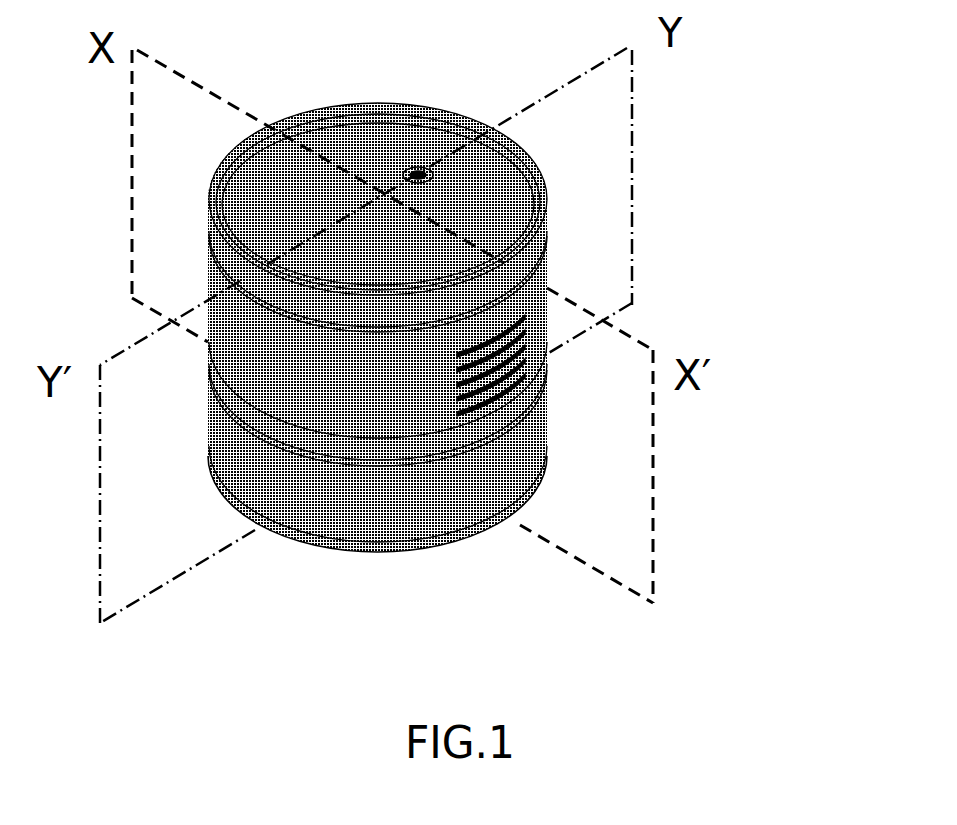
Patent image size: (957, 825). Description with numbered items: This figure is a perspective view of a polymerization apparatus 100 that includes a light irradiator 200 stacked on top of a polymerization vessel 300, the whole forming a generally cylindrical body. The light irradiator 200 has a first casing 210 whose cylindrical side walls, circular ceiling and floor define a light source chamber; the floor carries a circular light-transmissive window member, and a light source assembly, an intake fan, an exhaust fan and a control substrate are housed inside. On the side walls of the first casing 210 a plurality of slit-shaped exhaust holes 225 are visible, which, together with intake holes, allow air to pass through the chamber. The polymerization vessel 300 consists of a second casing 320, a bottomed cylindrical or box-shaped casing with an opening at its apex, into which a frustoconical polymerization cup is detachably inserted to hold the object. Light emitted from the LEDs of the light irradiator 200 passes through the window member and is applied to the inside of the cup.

The polymerization apparatus 100 is at (546, 371).
The light irradiator 200 is at (547, 217).
The first casing 210 is at (552, 250).
The slit-shaped exhaust holes 225 is at (512, 372).
The polymerization vessel 300 is at (540, 454).
The second casing 320 is at (552, 440).